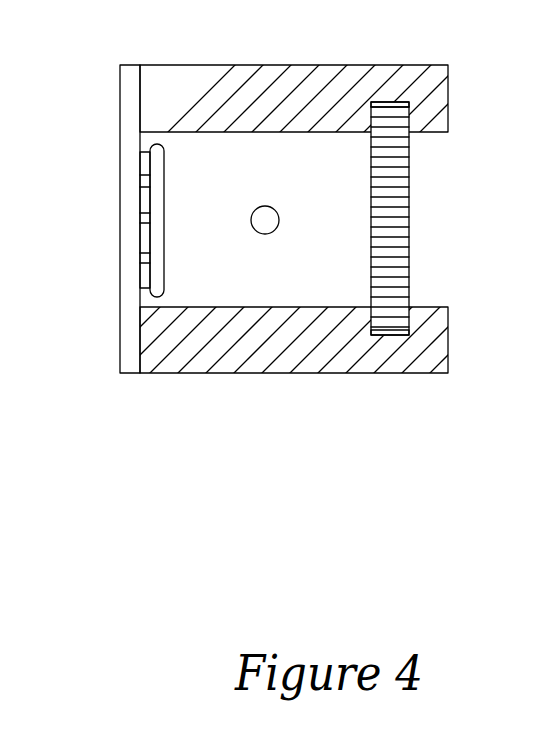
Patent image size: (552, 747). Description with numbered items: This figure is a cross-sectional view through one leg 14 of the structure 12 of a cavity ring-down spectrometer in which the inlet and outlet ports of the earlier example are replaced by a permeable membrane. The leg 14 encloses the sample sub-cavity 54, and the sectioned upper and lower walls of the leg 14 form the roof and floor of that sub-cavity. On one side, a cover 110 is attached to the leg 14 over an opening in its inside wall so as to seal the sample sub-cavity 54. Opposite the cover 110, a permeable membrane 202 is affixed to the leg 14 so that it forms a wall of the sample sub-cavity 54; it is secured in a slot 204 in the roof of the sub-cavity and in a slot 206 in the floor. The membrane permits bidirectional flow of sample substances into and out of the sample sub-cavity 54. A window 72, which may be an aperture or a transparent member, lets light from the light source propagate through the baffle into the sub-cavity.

The structure 12 is at (327, 77).
The leg 14 is at (435, 345).
The sample sub-cavity 54 is at (222, 153).
The window 72 is at (265, 220).
The cover 110 is at (133, 134).
The permeable membrane 202 is at (410, 218).
The slot 204 is at (385, 105).
The slot 206 is at (390, 337).